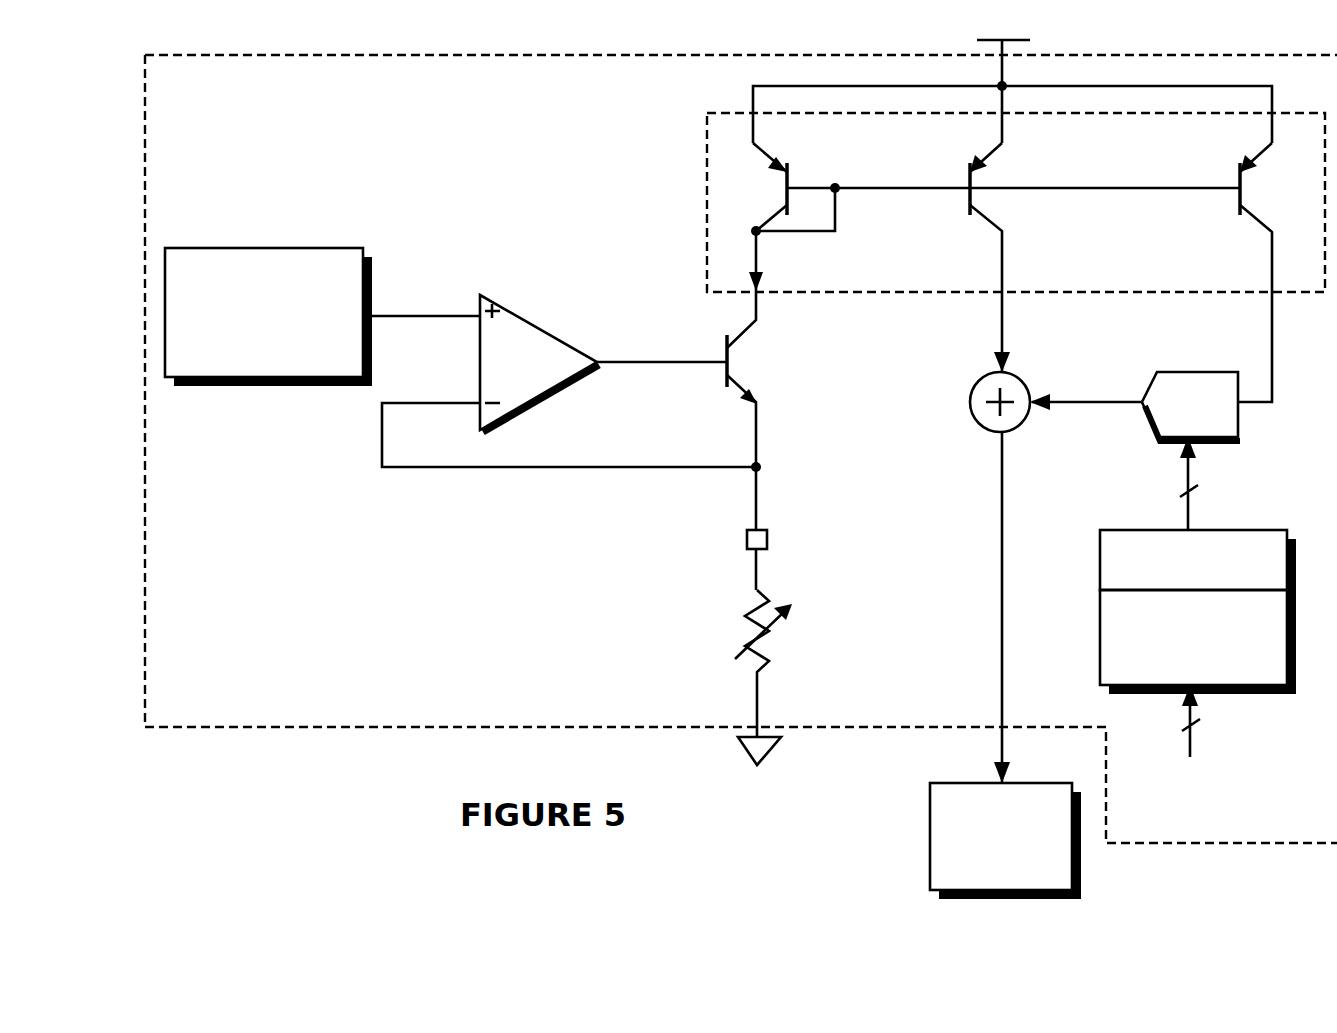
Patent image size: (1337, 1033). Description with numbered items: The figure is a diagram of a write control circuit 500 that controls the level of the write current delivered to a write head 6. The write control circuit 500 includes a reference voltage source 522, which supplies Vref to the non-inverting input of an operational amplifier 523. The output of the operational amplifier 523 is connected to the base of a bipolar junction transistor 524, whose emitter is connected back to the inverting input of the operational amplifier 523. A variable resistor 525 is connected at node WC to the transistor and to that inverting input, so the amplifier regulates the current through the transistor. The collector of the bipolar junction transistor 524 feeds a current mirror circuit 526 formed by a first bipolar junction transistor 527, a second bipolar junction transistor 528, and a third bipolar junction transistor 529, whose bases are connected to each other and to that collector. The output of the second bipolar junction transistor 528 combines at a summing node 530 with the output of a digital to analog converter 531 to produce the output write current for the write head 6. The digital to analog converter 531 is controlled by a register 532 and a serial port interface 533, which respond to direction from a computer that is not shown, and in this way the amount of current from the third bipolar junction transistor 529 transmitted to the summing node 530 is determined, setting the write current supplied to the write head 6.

The write control circuit 500 is at (256, 54).
The reference voltage source 522 is at (292, 252).
The operational amplifier 523 is at (537, 338).
The bipolar junction transistor 524 is at (727, 376).
The variable resistor 525 is at (752, 612).
The current mirror circuit 526 is at (706, 172).
The first bipolar junction transistor 527 is at (789, 172).
The second bipolar junction transistor 528 is at (970, 197).
The third bipolar junction transistor 529 is at (1240, 197).
The summing node 530 is at (979, 413).
The digital to analog converter 531 is at (1166, 373).
The register 532 is at (1124, 530).
The serial port interface 533 is at (1100, 653).
The write head 6 is at (934, 831).